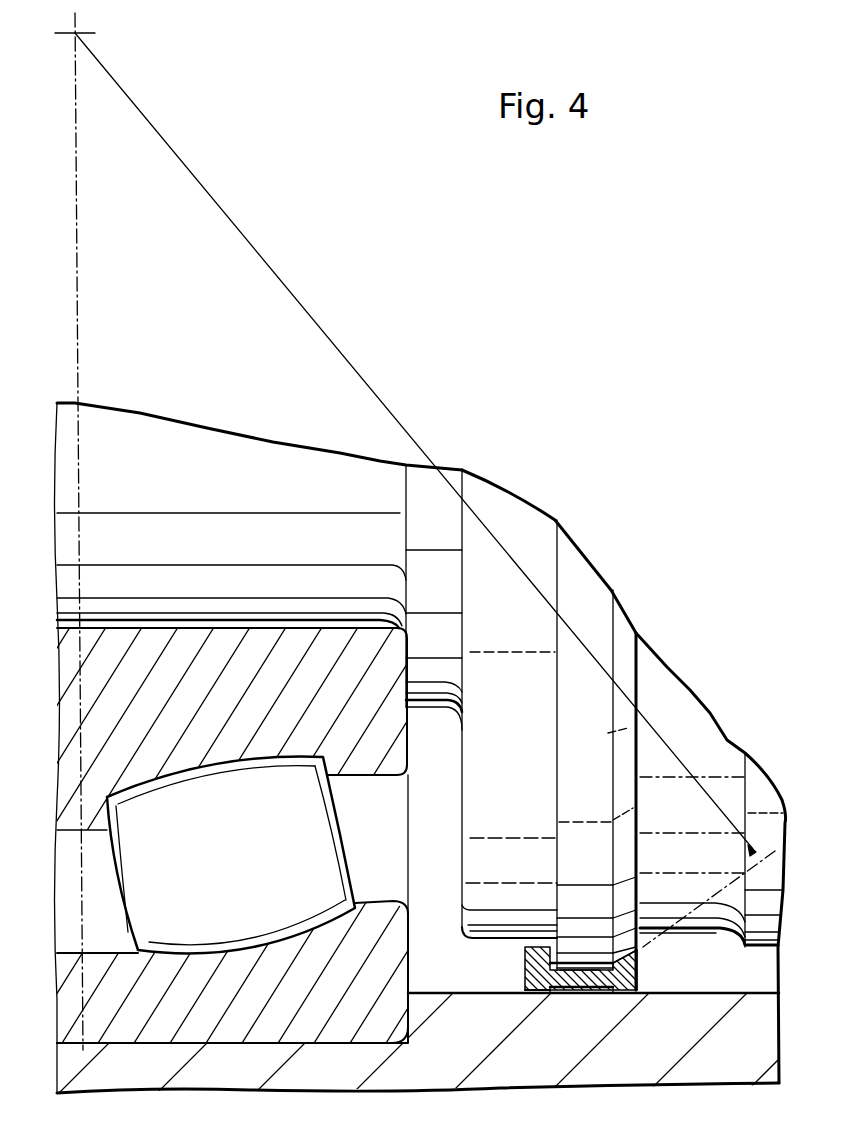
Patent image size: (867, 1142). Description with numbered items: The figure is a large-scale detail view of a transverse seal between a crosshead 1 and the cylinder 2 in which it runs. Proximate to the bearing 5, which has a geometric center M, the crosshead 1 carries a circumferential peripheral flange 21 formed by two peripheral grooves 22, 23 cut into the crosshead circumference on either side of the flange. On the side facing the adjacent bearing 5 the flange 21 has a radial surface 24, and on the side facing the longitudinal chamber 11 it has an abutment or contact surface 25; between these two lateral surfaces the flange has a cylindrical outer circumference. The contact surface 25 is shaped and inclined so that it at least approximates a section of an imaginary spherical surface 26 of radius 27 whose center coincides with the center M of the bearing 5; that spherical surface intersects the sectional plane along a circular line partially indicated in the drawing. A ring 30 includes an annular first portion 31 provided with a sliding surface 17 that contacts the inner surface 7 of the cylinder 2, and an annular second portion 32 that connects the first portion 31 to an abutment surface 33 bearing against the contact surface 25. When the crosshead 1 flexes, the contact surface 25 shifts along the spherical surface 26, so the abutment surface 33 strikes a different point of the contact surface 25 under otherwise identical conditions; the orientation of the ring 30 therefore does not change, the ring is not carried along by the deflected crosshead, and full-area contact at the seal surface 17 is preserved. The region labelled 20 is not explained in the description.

The geometric center M is at (82, 30).
The crosshead 1 is at (226, 455).
The cylinder 2 is at (307, 1073).
The bearing 5 is at (218, 998).
The inner surface 7 is at (753, 990).
The longitudinal chamber 11 is at (777, 952).
The sliding surface 17 is at (540, 995).
The gap 20 is at (658, 976).
The peripheral flange 21 is at (597, 869).
The peripheral groove 22 is at (497, 943).
The peripheral groove 23 is at (685, 937).
The radial surface 24 is at (555, 800).
The contact surface 25 is at (625, 800).
The spherical surface 26 is at (717, 893).
The radius 27 is at (365, 383).
The ring 30 is at (522, 970).
The first portion 31 is at (528, 985).
The second portion 32 is at (588, 987).
The abutment surface 33 is at (615, 993).